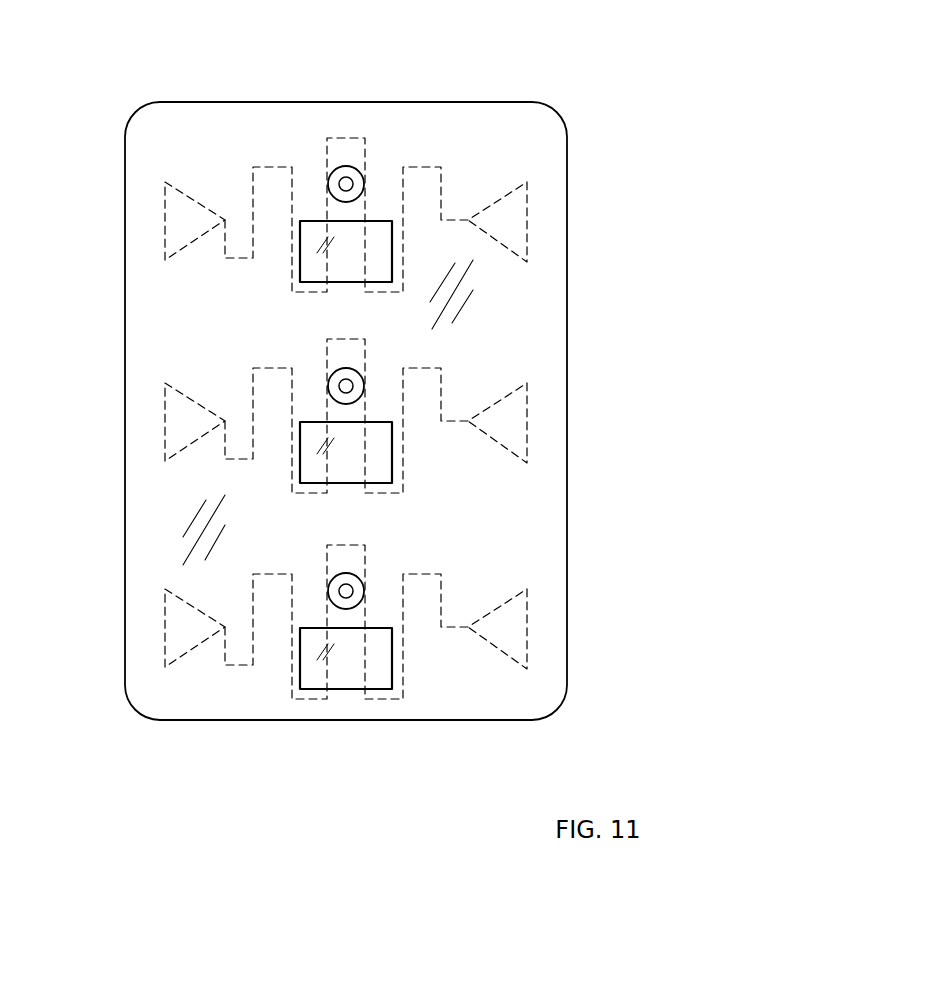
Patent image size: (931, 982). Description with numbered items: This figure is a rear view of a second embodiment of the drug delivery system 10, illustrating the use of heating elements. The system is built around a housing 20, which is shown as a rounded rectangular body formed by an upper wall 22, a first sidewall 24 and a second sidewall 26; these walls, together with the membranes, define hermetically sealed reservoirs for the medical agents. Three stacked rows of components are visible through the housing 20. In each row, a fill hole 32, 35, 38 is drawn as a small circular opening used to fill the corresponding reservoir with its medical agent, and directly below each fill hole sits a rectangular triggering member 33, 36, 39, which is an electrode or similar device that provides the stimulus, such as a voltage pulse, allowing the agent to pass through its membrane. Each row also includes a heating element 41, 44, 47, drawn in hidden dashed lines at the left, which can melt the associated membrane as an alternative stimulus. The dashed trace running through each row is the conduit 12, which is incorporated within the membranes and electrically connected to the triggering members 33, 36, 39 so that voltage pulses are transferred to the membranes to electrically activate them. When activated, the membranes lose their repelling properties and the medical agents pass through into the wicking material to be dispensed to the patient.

The drug delivery system 10 is at (564, 69).
The conduit 12 is at (345, 40).
The housing 20 is at (214, 95).
The upper wall 22 is at (174, 490).
The first sidewall 24 is at (418, 101).
The second sidewall 26 is at (232, 720).
The first fill hole 32 is at (346, 184).
The first triggering member 33 is at (313, 268).
The second fill hole 35 is at (346, 386).
The second triggering member 36 is at (380, 452).
The third fill hole 38 is at (346, 591).
The third triggering member 39 is at (372, 663).
The heating element 41 is at (165, 220).
The heating element 44 is at (165, 421).
The heating element 47 is at (165, 627).